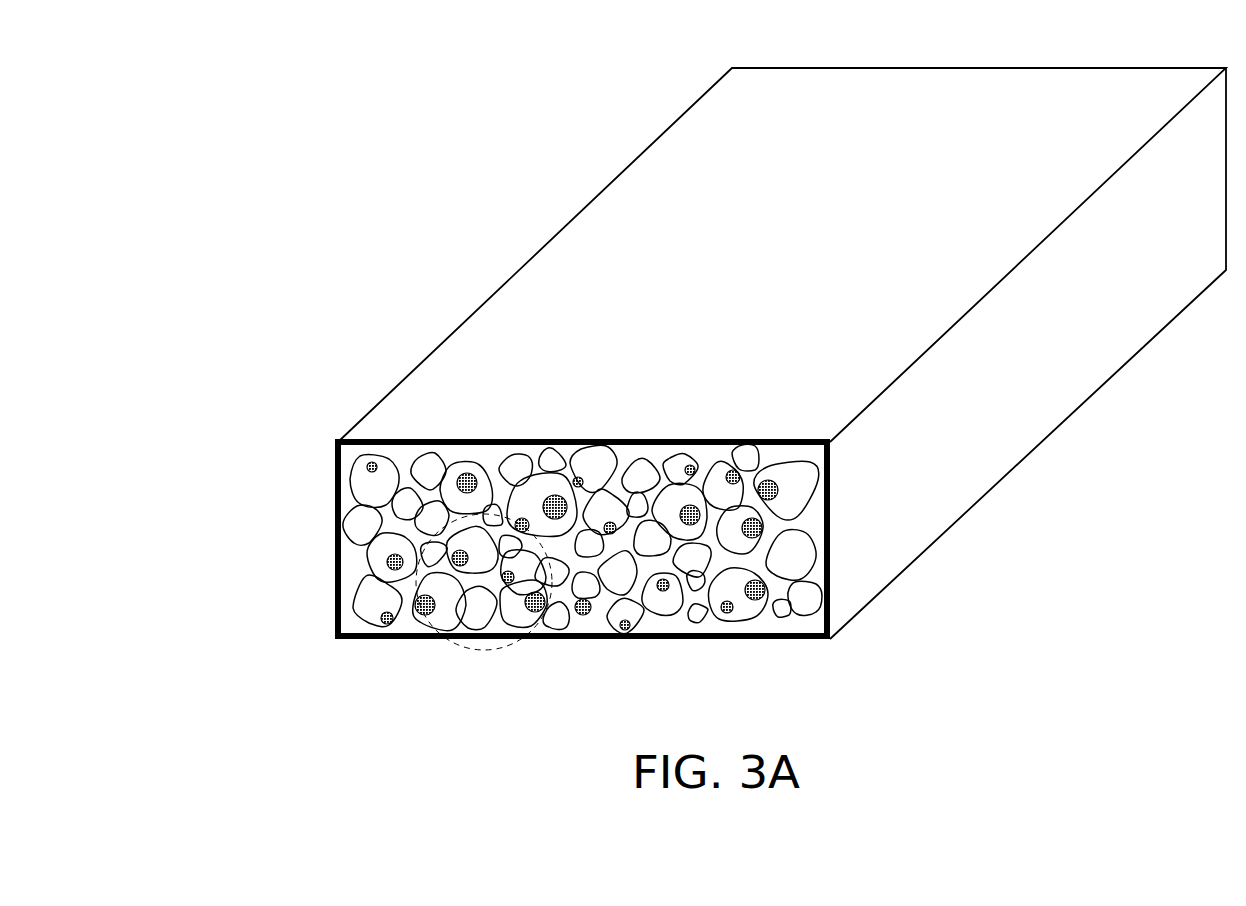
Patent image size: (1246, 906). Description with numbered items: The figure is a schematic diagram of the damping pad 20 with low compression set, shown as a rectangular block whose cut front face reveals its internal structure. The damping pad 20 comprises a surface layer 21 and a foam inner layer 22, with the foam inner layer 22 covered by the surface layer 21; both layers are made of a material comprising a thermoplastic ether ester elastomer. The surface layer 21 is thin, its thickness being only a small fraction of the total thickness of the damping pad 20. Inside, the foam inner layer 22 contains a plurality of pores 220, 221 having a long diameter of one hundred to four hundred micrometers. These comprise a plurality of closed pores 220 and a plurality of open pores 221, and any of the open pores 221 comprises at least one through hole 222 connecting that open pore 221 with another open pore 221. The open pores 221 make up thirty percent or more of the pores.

The damping pad 20 is at (450, 132).
The surface layer 21 is at (336, 453).
The foam inner layer 22 is at (498, 488).
The closed pores 220 is at (357, 529).
The open pores 221 is at (357, 595).
The through hole 222 is at (385, 618).